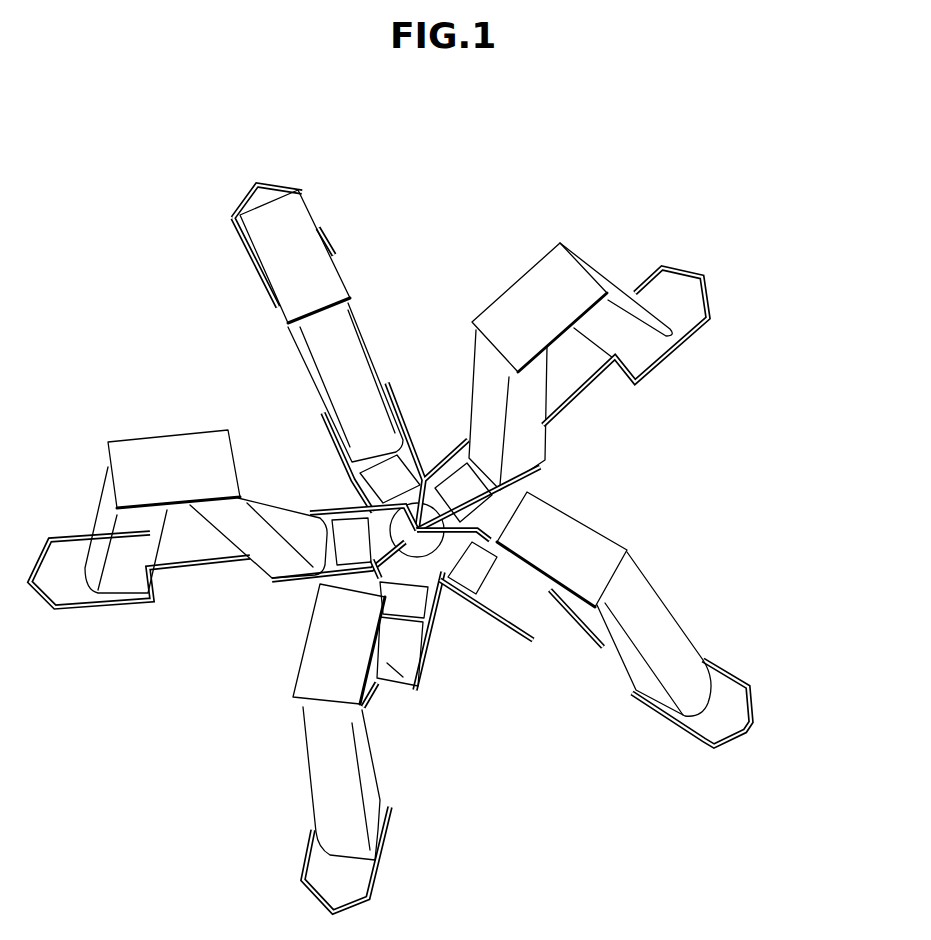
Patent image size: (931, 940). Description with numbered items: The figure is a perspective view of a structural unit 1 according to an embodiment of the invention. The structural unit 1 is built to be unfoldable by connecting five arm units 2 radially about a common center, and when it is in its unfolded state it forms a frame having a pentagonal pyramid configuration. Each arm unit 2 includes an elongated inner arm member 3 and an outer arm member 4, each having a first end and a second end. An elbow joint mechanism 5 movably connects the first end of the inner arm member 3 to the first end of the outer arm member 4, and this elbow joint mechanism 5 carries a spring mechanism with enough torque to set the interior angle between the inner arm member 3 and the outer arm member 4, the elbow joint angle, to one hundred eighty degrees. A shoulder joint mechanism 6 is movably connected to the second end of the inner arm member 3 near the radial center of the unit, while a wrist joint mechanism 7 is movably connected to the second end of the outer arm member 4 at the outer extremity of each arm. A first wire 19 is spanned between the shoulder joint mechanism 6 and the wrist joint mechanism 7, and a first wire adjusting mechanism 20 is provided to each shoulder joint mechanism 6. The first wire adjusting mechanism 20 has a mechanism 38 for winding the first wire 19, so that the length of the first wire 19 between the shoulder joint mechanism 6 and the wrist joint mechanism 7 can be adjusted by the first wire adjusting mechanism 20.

The structural unit 1 is at (568, 232).
The arm unit 2 is at (683, 614).
The inner arm member 3 is at (534, 388).
The outer arm member 4 is at (612, 278).
The elbow joint mechanism 5 is at (543, 277).
The shoulder joint mechanism 6 is at (547, 472).
The wrist joint mechanism 7 is at (707, 325).
The first wire 19 is at (386, 690).
The first wire adjusting mechanism 20 is at (452, 612).
The mechanism for winding first wire 38 is at (445, 603).